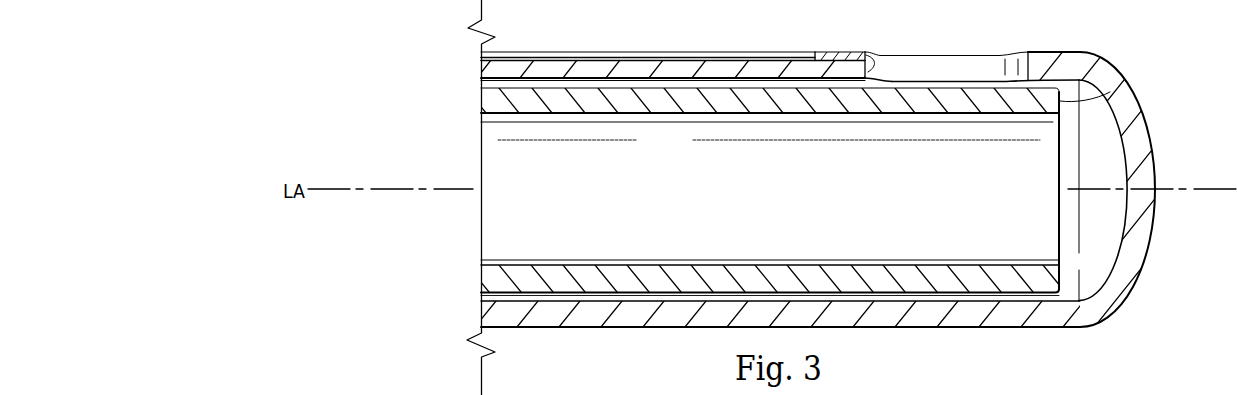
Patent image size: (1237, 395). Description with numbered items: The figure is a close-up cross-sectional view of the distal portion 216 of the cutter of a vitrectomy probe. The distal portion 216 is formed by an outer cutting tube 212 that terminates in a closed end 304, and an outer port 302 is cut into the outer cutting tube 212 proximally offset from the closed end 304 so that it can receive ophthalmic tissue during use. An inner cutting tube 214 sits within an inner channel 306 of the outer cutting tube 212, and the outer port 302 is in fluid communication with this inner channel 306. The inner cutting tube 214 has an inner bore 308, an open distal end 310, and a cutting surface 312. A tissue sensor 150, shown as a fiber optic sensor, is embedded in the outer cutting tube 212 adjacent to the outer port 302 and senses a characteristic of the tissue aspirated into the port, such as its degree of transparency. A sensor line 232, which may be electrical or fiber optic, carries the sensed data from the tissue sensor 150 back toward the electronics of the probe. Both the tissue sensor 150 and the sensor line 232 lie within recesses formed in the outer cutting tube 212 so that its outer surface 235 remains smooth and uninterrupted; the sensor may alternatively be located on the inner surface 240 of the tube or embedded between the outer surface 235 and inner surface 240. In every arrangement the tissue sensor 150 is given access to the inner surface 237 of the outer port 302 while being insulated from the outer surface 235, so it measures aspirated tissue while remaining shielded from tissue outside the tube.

The tissue sensor 150 is at (848, 52).
The outer cutting tube 212 is at (490, 70).
The inner cutting tube 214 is at (600, 270).
The distal portion 216 is at (398, 134).
The sensor line 232 is at (680, 52).
The outer surface 235 is at (580, 52).
The inner surface of the outer port 237 is at (880, 62).
The inner surface 240 is at (688, 80).
The outer port 302 is at (976, 63).
The closed end 304 is at (1155, 151).
The inner channel 306 is at (908, 297).
The inner bore 308 is at (790, 203).
The open distal end 310 is at (1062, 228).
The cutting surface 312 is at (1112, 88).